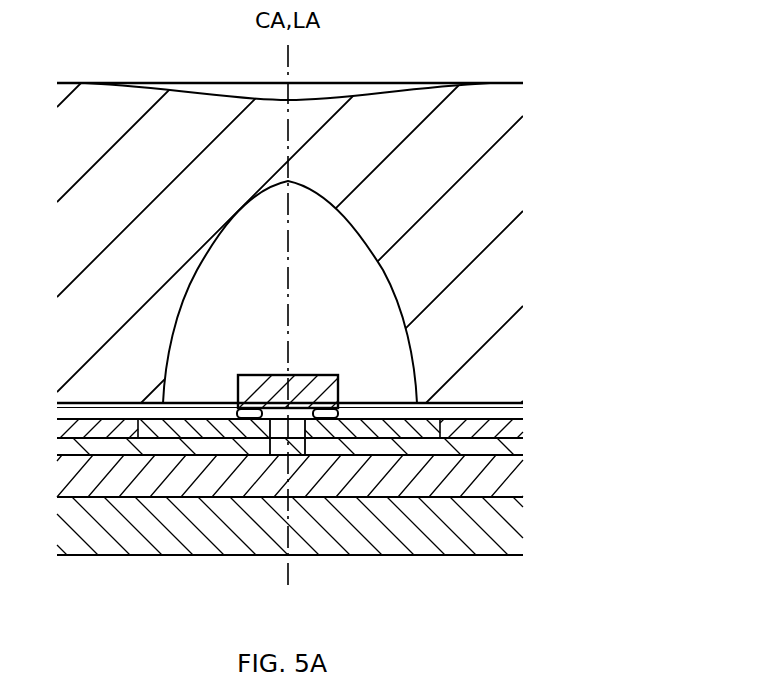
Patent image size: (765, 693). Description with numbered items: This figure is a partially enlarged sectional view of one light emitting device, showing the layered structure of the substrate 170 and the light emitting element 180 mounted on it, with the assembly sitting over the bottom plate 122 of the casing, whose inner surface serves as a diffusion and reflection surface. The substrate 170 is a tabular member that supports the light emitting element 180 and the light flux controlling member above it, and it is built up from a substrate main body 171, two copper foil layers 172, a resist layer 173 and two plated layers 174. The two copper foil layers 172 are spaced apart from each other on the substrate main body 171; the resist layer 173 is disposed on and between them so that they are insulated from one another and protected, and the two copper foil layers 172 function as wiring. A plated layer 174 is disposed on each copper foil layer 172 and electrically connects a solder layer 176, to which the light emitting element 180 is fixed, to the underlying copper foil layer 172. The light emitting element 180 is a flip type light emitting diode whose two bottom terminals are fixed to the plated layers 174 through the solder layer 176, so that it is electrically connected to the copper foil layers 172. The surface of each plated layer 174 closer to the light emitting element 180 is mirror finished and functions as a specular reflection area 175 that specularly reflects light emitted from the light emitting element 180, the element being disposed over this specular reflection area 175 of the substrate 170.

The substrate 170 is at (368, 333).
The substrate main body 171 is at (335, 478).
The copper foil layer 172 is at (515, 442).
The resist layer 173 is at (515, 425).
The plated layer 174 is at (458, 421).
The specular reflection area 175 is at (412, 427).
The solder layer 176 is at (338, 406).
The light emitting element 180 is at (265, 392).
The bottom plate 122 is at (513, 526).